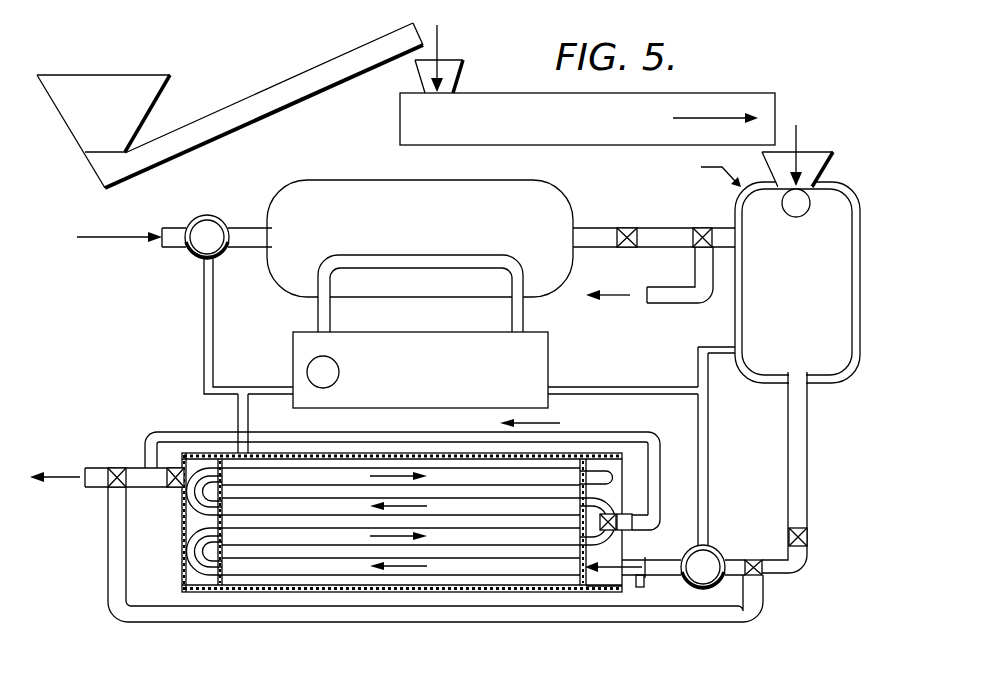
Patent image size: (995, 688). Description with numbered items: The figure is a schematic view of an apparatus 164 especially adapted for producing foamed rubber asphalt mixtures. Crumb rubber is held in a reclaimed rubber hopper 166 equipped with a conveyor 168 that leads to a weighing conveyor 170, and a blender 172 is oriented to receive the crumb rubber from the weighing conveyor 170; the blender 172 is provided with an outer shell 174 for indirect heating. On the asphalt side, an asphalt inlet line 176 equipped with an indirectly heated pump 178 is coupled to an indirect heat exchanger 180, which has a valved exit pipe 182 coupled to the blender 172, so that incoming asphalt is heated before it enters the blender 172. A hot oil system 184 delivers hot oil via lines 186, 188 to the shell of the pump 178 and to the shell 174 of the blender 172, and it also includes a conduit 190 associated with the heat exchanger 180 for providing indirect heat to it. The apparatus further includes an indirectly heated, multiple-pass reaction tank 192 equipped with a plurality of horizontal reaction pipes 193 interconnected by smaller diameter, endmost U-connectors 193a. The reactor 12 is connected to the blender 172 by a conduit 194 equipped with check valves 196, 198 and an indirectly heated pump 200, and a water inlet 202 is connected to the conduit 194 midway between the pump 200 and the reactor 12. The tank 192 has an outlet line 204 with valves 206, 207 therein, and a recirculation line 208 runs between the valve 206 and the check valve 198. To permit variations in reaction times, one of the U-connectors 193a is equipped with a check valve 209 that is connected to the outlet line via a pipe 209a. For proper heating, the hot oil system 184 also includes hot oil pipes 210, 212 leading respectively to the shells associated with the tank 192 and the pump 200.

The reactor 12 is at (603, 598).
The apparatus 164 is at (730, 78).
The reclaimed rubber hopper 166 is at (152, 88).
The conveyor 168 is at (302, 78).
The weighing conveyor 170 is at (522, 100).
The blender 172 is at (840, 217).
The outer shell 174 is at (840, 370).
The asphalt inlet line 176 is at (173, 246).
The pump 178 is at (227, 212).
The heat exchanger 180 is at (378, 182).
The valved exit pipe 182 is at (588, 228).
The hot oil system 184 is at (412, 340).
The hot oil line 186 is at (210, 313).
The hot oil line 188 is at (667, 393).
The conduit 190 is at (332, 308).
The reaction tank 192 is at (290, 592).
The horizontal reaction pipes 193 is at (441, 572).
The U-connectors 193a is at (190, 552).
The conduit 194 is at (802, 490).
The check valve 196 is at (807, 537).
The check valve 198 is at (763, 568).
The pump 200 is at (713, 545).
The water inlet 202 is at (643, 584).
The outlet line 204 is at (136, 483).
The valve 206 is at (117, 467).
The valve 207 is at (170, 467).
The recirculation line 208 is at (113, 592).
The check valve 209 is at (625, 546).
The pipe 209a is at (575, 433).
The hot oil pipe 210 is at (237, 412).
The hot oil pipe 212 is at (705, 440).